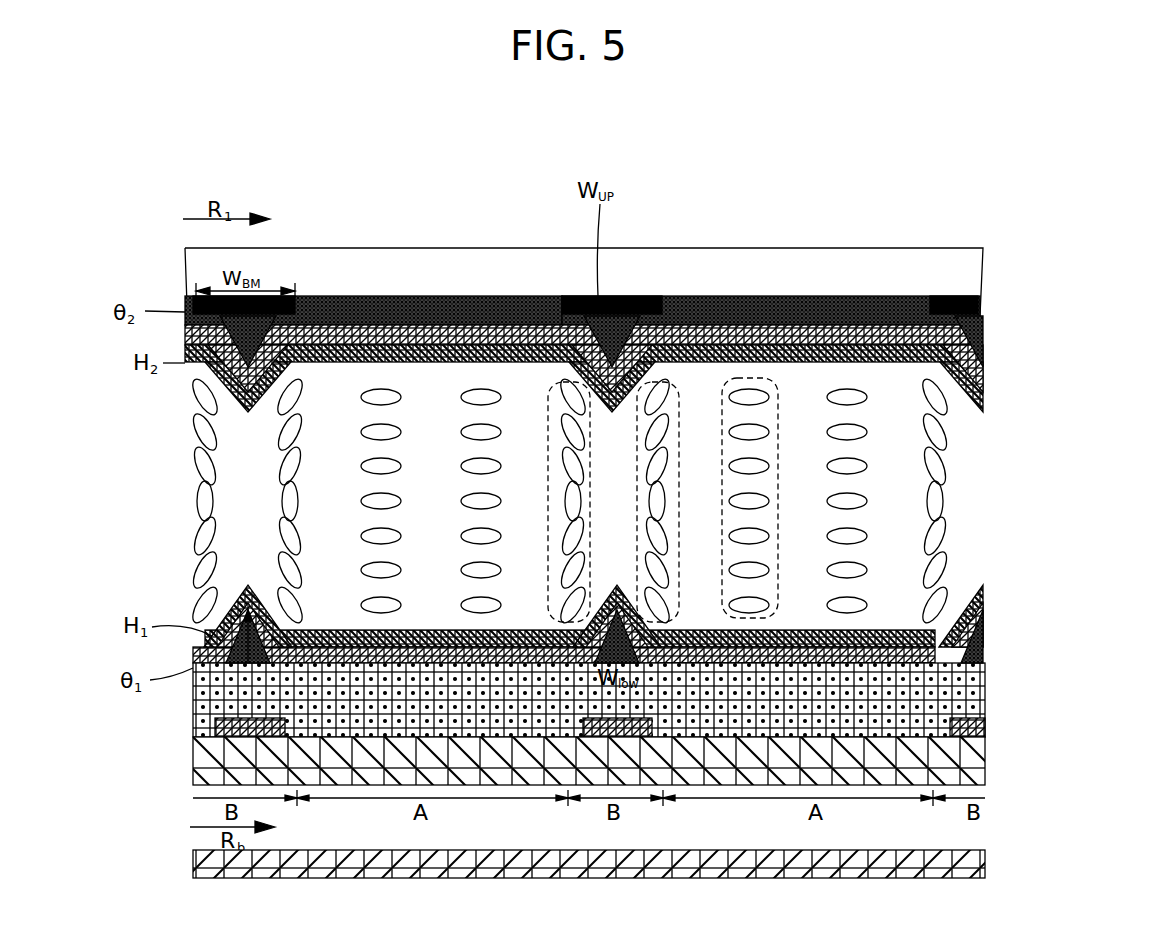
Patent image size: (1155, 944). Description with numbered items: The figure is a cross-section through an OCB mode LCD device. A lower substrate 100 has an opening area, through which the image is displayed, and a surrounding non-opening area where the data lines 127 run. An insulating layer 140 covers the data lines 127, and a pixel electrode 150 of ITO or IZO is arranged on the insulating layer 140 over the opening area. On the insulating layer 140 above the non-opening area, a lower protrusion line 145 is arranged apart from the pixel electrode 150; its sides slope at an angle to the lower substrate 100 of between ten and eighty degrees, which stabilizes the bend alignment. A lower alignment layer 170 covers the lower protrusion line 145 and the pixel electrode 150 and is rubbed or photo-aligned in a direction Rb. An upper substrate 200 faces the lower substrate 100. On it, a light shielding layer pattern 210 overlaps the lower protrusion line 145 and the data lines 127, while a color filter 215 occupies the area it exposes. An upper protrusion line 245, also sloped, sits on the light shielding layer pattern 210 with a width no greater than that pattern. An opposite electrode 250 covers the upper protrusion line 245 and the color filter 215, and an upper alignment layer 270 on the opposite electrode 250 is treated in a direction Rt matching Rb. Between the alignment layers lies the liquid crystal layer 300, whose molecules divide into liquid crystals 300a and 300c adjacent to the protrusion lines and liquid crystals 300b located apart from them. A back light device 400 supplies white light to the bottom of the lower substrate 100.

The lower substrate 100 is at (960, 765).
The data line 127 is at (985, 725).
The insulating layer 140 is at (965, 690).
The lower protrusion line 145 is at (975, 652).
The pixel electrode 150 is at (857, 665).
The lower alignment layer 170 is at (975, 612).
The upper substrate 200 is at (953, 268).
The light shielding layer pattern 210 is at (630, 296).
The color filter 215 is at (470, 312).
The upper protrusion line 245 is at (548, 326).
The opposite electrode 250 is at (427, 332).
The upper alignment layer 270 is at (368, 335).
The OCB mode liquid crystal layer 300 is at (648, 389).
The liquid crystals adjacent to the protrusion lines 300a is at (660, 386).
The liquid crystals apart from the protrusion lines 300b is at (754, 380).
The liquid crystals adjacent to the protrusion lines 300c is at (546, 392).
The back light device 400 is at (985, 862).